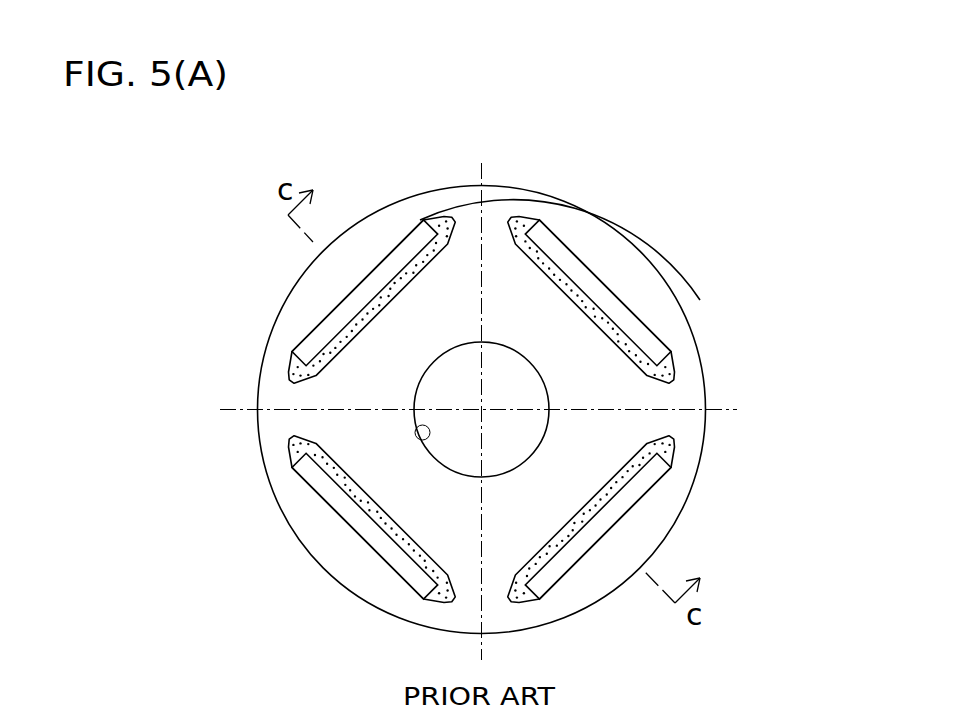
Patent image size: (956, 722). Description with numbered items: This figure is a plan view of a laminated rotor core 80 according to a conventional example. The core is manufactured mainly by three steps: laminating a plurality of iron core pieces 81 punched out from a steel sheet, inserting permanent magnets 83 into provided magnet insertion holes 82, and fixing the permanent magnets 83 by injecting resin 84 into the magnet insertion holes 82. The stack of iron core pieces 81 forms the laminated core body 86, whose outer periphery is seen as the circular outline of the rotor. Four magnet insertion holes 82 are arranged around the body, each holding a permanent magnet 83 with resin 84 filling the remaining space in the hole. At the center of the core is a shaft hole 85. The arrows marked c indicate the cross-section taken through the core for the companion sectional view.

The laminated rotor core 80 is at (697, 207).
The iron core piece 81 is at (505, 203).
The magnet insertion hole 82 is at (407, 273).
The permanent magnet 83 is at (342, 318).
The resin 84 is at (287, 372).
The shaft hole 85 is at (416, 436).
The laminated core body 86 is at (598, 218).